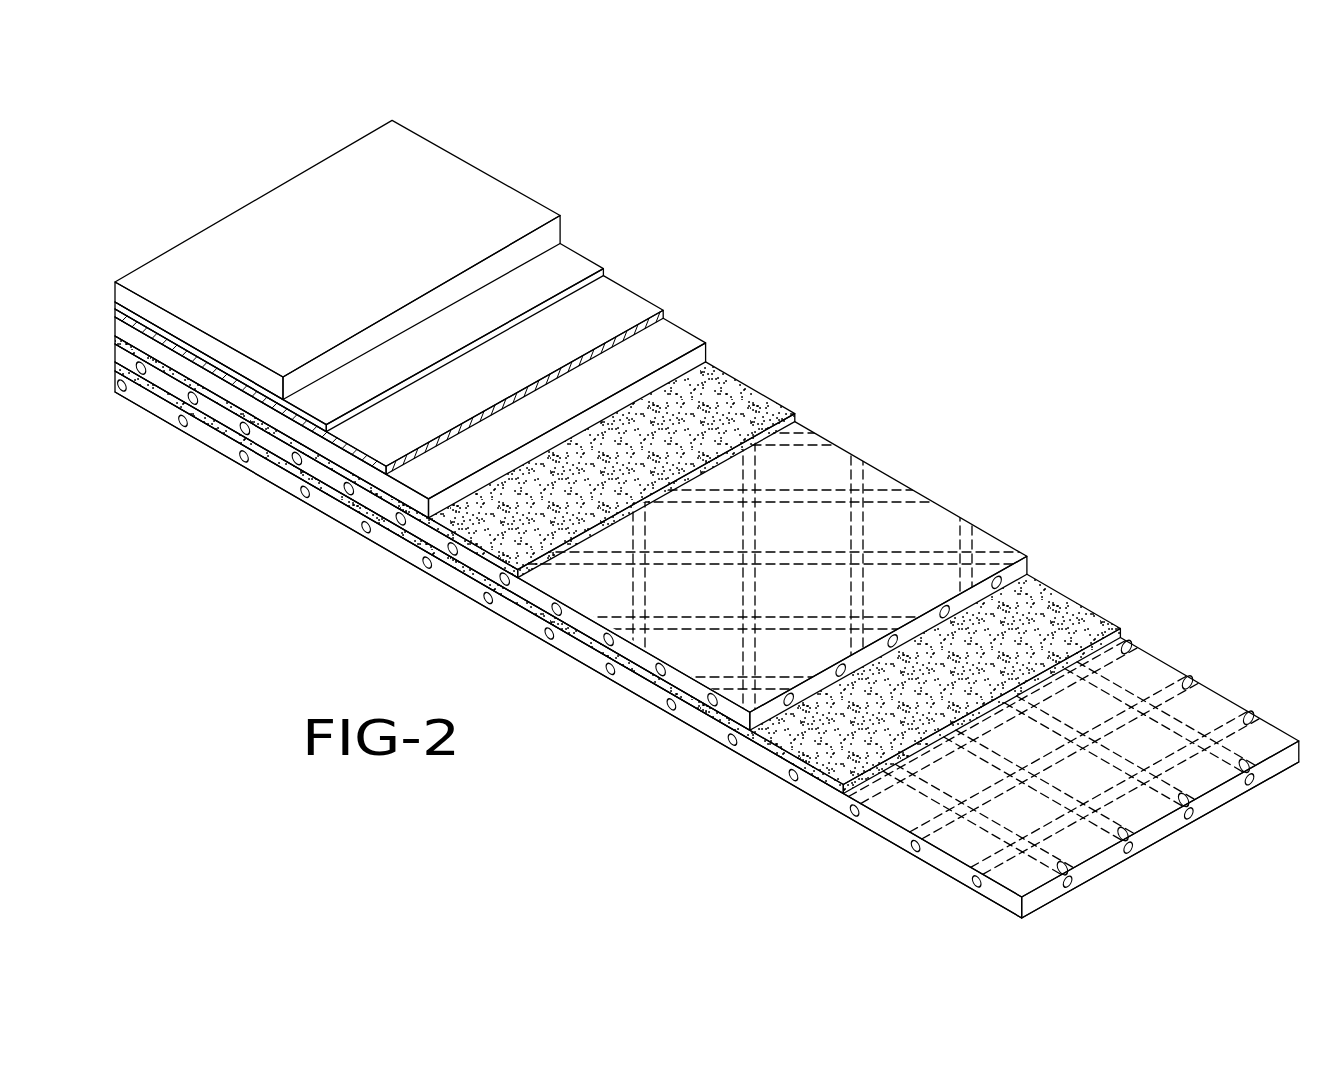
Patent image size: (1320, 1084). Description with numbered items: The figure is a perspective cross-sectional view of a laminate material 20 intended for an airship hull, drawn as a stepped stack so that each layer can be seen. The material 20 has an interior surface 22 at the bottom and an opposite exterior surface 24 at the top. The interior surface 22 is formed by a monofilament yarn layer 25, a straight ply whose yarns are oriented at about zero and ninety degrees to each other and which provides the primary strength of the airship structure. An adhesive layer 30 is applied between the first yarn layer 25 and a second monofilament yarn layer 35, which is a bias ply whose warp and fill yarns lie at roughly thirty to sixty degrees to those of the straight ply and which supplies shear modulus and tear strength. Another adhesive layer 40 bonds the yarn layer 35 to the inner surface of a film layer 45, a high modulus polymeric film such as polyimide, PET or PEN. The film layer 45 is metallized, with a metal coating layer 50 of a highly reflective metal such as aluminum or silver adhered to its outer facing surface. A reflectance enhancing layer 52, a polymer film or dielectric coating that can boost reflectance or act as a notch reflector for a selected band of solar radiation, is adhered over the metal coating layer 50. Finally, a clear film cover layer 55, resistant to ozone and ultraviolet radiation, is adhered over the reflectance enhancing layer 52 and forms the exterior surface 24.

The laminate material 20 is at (885, 333).
The interior surface 22 is at (987, 913).
The exterior surface 24 is at (367, 113).
The monofilament yarn layer 25 is at (1167, 675).
The adhesive layer 30 is at (1058, 600).
The second monofilament yarn layer 35 is at (927, 505).
The adhesive layer 40 is at (773, 402).
The film layer 45 is at (675, 340).
The metal coating layer 50 is at (613, 303).
The reflectance enhancing layer 52 is at (568, 265).
The clear film cover layer 55 is at (478, 202).